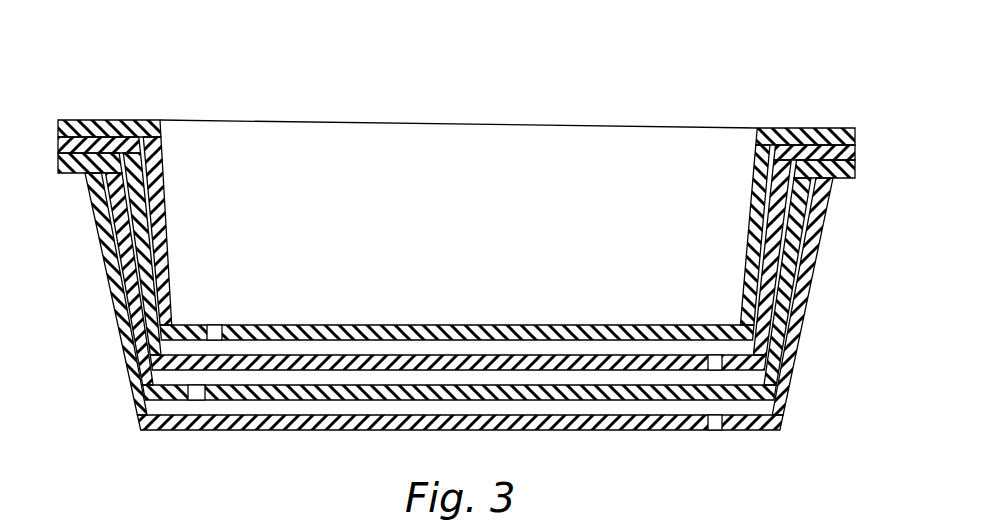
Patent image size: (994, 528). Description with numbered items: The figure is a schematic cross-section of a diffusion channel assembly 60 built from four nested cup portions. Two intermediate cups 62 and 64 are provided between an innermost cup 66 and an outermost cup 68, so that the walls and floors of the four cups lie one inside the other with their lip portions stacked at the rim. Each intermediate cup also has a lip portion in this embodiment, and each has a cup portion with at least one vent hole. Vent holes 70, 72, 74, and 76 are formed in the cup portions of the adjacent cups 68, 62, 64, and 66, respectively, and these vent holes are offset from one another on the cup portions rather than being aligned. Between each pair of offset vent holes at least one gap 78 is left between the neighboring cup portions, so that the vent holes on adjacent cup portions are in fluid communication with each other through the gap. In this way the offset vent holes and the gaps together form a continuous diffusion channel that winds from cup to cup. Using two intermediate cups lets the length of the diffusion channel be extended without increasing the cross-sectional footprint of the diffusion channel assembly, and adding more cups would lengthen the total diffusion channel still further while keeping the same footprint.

The diffusion channel assembly 60 is at (703, 76).
The intermediate cup 62 is at (793, 203).
The intermediate cup 64 is at (768, 232).
The innermost cup 66 is at (746, 203).
The outermost cup 68 is at (803, 283).
The vent hole 70 is at (714, 431).
The vent hole 72 is at (199, 395).
The vent hole 74 is at (713, 360).
The vent hole 76 is at (215, 330).
The gap 78 is at (330, 346).